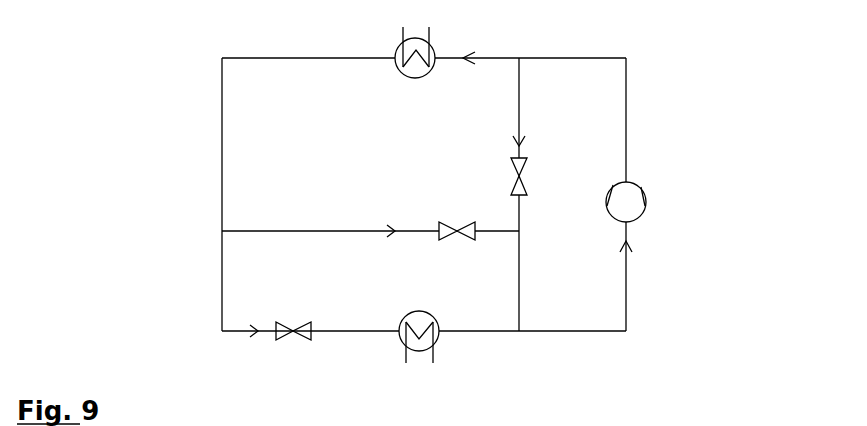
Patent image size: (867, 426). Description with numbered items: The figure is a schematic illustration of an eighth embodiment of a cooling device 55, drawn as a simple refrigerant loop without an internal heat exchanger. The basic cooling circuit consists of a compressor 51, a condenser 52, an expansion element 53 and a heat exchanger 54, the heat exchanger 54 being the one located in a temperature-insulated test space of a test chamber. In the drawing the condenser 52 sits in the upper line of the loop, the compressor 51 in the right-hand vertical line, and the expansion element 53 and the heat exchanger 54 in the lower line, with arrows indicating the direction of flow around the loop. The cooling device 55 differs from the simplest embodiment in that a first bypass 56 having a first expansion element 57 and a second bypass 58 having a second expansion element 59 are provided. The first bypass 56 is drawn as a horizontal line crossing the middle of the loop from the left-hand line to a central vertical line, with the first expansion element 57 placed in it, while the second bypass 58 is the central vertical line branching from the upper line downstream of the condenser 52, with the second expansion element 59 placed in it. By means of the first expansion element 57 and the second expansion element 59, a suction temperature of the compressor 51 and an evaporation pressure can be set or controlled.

The compressor 51 is at (623, 205).
The condenser 52 is at (415, 52).
The expansion element 53 is at (310, 322).
The heat exchanger 54 is at (420, 322).
The cooling device 55 is at (113, 126).
The first bypass 56 is at (313, 216).
The first expansion element 57 is at (446, 228).
The second bypass 58 is at (530, 101).
The second expansion element 59 is at (528, 190).